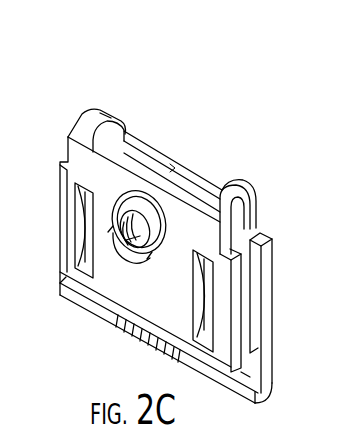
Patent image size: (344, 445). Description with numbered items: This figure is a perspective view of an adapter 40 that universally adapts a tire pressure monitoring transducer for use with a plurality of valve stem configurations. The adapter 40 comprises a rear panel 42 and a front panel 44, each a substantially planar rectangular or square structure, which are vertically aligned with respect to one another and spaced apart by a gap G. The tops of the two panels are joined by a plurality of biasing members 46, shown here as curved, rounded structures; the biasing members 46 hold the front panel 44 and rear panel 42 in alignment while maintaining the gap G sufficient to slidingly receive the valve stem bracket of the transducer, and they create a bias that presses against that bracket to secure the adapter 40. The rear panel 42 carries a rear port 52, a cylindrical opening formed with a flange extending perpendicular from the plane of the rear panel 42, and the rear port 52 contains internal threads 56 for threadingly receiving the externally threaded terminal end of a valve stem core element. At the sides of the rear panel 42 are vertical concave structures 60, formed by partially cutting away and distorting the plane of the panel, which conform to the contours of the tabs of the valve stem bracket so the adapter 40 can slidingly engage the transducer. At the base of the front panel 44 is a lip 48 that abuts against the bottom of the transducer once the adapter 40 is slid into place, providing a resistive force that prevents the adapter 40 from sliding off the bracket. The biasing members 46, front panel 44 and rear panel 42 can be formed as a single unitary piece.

The adapter 40 is at (216, 78).
The rear panel 42 is at (67, 181).
The front panel 44 is at (269, 255).
The biasing member 46 is at (93, 107).
The lip 48 is at (265, 398).
The rear port 52 is at (141, 197).
The internal threads 56 is at (107, 250).
The vertical concave structures 60 is at (205, 332).
The gap G is at (172, 171).